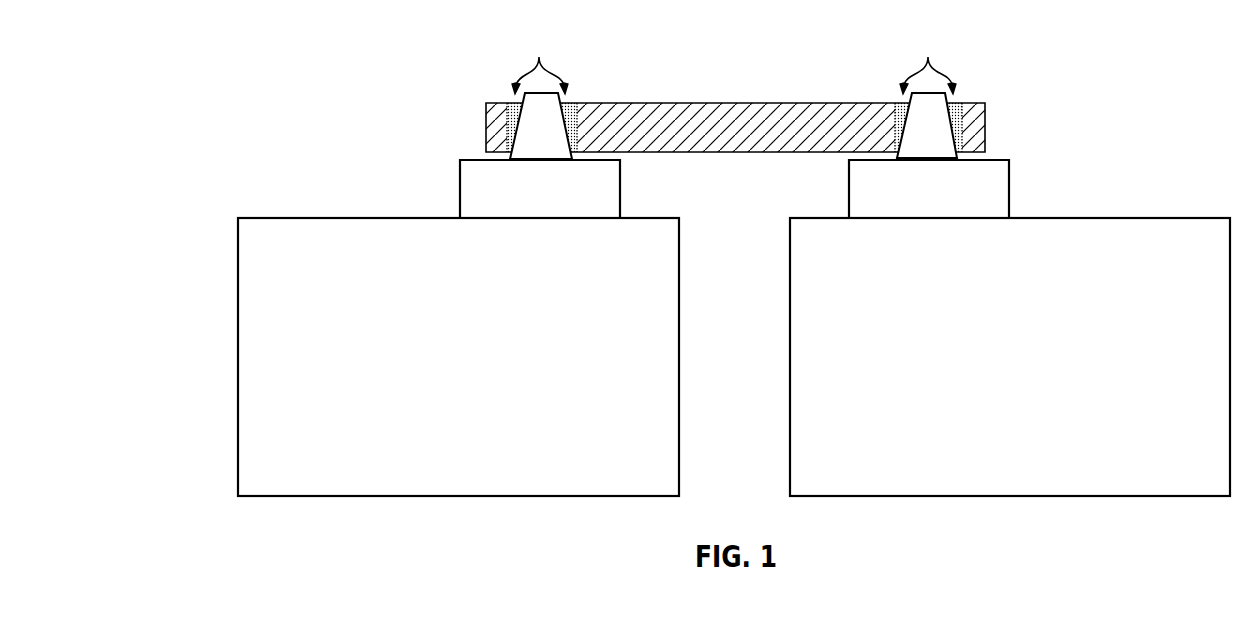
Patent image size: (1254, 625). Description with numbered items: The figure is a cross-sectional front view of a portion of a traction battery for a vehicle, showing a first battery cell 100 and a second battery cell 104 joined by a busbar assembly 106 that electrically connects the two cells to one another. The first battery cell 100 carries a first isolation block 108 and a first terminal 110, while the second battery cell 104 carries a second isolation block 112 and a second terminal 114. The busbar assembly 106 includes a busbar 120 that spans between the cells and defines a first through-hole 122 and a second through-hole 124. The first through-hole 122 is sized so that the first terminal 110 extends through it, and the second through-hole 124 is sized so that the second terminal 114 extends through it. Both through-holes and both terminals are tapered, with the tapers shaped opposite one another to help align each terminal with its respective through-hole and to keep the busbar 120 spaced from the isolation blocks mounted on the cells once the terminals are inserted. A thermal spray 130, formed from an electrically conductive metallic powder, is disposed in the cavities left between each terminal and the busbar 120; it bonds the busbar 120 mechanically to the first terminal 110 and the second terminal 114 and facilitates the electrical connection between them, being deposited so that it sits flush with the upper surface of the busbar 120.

The first battery cell 100 is at (248, 217).
The second battery cell 104 is at (1183, 218).
The busbar assembly 106 is at (823, 84).
The first isolation block 108 is at (460, 193).
The second isolation block 112 is at (1010, 178).
The first terminal 110 is at (537, 143).
The second terminal 114 is at (930, 120).
The busbar 120 is at (985, 101).
The first through-hole 122 is at (507, 102).
The second through-hole 124 is at (895, 102).
The thermal spray 130 is at (539, 57).